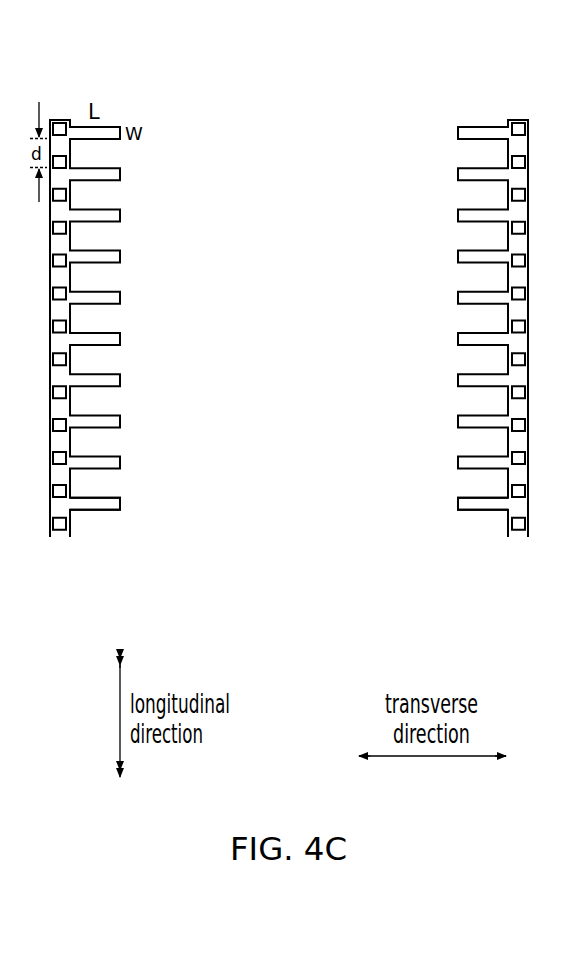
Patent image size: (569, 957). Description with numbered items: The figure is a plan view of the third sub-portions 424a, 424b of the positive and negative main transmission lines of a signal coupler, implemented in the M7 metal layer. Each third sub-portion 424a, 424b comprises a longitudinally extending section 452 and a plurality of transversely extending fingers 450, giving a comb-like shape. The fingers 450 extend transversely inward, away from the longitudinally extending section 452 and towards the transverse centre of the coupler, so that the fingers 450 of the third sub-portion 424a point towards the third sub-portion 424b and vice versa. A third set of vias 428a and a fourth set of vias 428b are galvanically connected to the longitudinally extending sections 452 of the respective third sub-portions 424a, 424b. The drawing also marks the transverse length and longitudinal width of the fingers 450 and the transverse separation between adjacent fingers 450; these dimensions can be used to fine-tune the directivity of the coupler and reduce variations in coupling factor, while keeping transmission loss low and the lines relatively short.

The third sub-portion of the positive main transmission line 424a is at (90, 460).
The third set of vias 428a is at (67, 326).
The third sub-portion of the negative main transmission line 424b is at (515, 145).
The fourth set of vias 428b is at (521, 121).
The transversely extending fingers 450 is at (103, 507).
The longitudinally extending section 452 is at (59, 542).